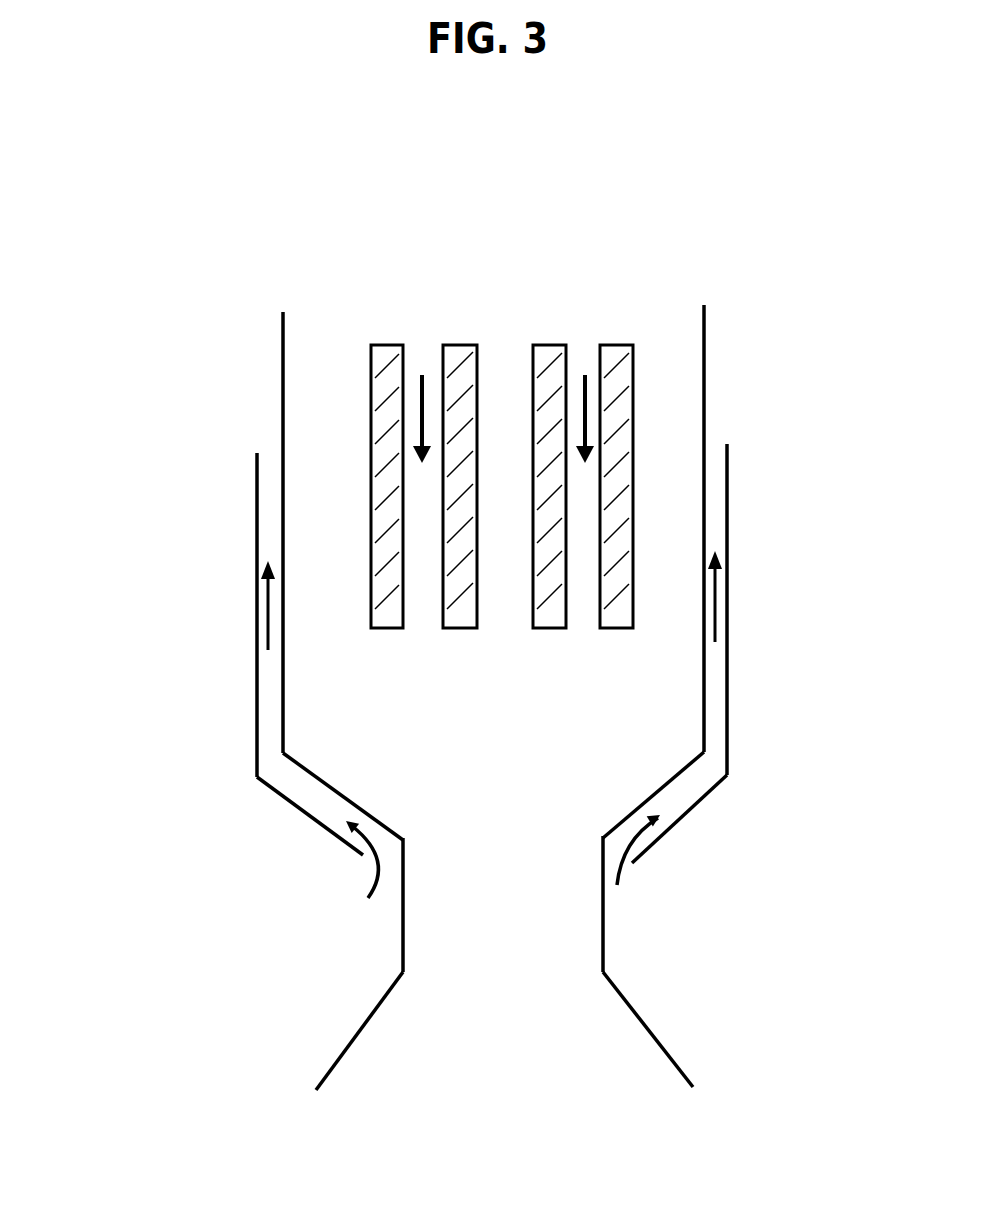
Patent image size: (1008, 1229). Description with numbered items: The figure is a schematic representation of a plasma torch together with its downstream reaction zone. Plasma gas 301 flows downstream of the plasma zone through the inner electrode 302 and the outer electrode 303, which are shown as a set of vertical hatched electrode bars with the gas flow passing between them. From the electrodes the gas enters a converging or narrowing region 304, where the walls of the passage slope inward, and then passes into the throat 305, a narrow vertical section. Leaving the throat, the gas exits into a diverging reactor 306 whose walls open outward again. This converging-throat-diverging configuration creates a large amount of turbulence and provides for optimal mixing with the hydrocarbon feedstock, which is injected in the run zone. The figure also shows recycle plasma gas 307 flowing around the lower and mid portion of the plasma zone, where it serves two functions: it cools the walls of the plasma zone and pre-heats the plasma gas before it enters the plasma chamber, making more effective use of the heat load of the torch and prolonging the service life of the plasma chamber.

The plasma gas 301 is at (585, 395).
The inner electrode 302 is at (553, 331).
The outer electrode 303 is at (593, 530).
The converging region 304 is at (748, 752).
The throat 305 is at (612, 928).
The diverging reactor 306 is at (720, 977).
The recycle plasma gas 307 is at (618, 866).